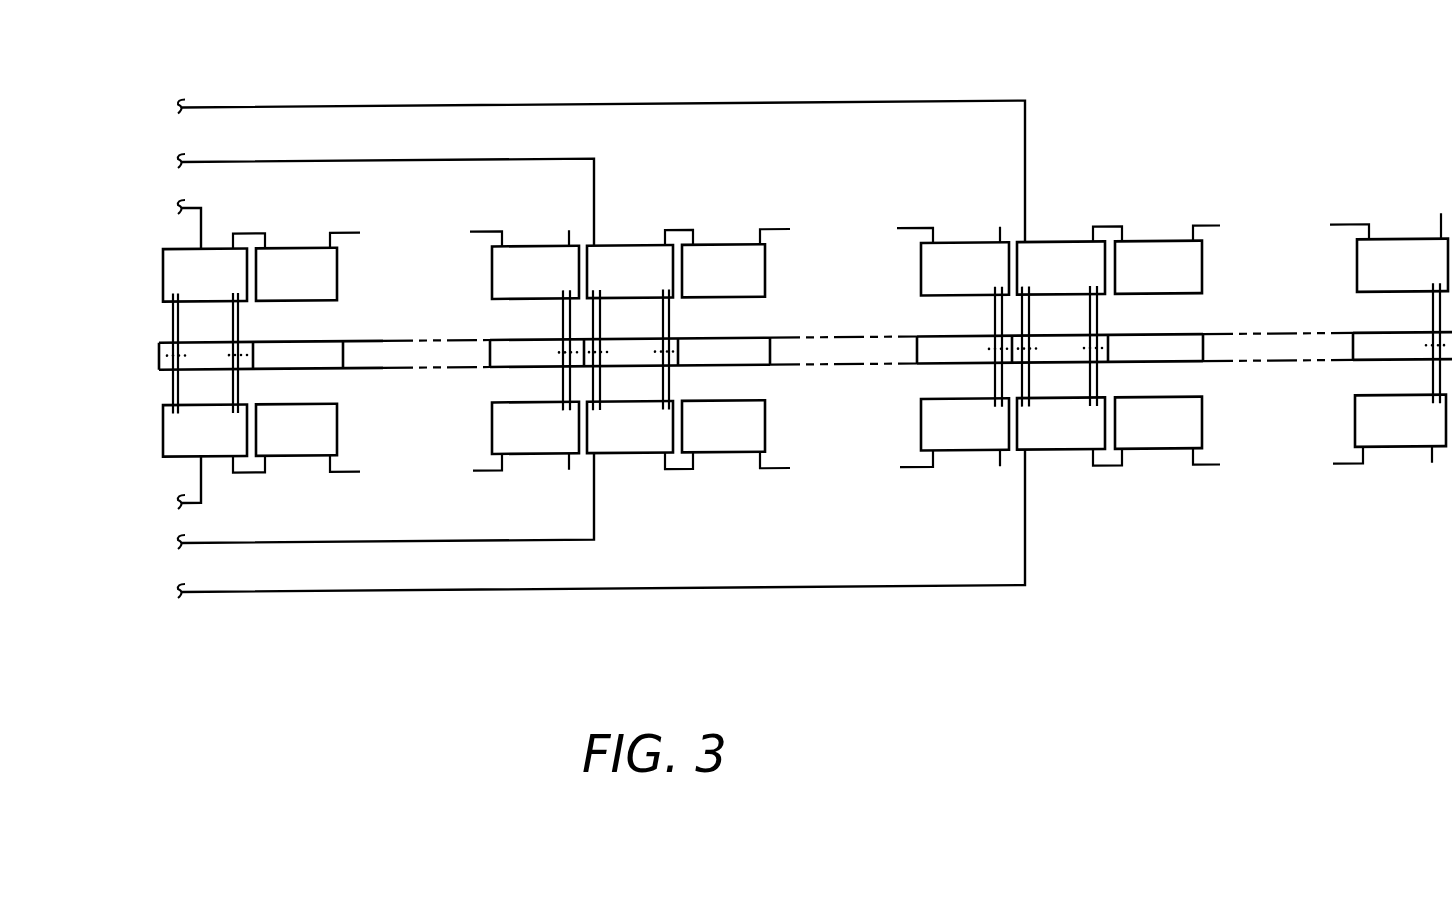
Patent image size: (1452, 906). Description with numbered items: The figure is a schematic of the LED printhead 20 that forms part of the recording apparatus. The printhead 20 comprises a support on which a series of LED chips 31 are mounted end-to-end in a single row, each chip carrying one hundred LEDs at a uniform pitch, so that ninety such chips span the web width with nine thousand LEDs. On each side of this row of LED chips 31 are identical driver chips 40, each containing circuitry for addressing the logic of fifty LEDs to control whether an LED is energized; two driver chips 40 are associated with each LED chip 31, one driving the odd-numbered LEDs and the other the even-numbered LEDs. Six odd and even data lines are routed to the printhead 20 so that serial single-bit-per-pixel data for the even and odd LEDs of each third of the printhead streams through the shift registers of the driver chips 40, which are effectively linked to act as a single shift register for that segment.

The printhead 20 is at (778, 93).
The LED chip 31 is at (1203, 319).
The driver chip 40 is at (1357, 274).